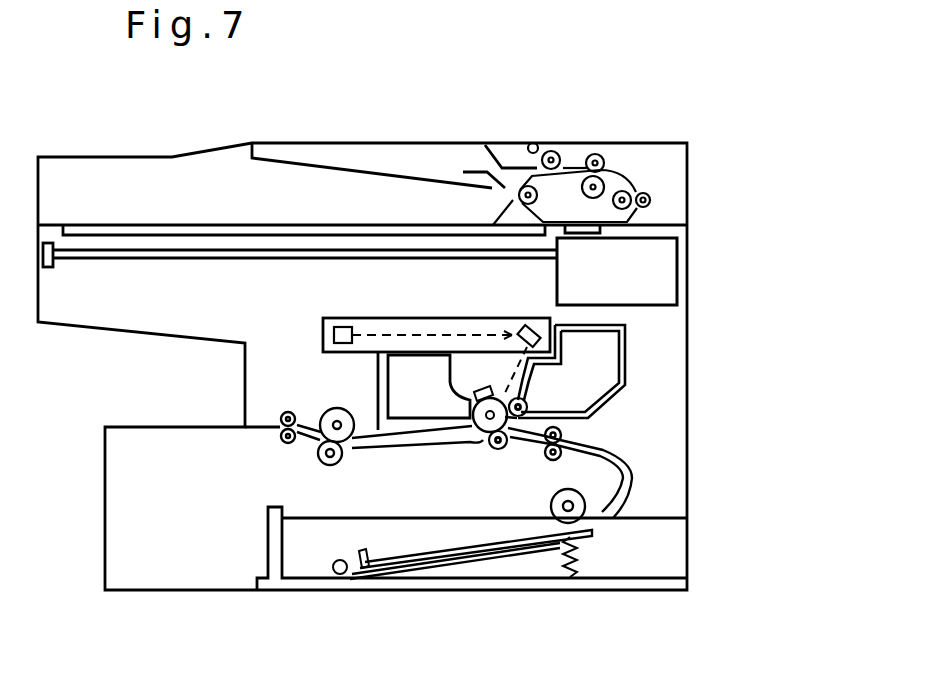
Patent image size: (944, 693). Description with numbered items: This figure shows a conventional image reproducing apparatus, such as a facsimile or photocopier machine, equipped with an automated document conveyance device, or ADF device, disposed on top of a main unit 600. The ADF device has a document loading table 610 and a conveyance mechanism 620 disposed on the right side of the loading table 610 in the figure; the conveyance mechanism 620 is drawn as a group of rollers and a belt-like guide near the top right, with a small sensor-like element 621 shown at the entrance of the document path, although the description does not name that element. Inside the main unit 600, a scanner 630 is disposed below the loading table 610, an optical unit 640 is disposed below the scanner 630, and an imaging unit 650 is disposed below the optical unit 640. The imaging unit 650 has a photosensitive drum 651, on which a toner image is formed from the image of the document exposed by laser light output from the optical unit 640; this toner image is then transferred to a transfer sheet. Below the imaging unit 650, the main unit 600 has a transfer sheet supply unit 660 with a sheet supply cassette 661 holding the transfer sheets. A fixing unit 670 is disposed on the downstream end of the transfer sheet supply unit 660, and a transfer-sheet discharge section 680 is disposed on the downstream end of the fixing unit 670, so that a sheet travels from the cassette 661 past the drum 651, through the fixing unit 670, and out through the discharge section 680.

The main unit 600 is at (689, 278).
The document loading table 610 is at (372, 172).
The conveyance mechanism 620 is at (632, 165).
The document sensor 621 is at (538, 143).
The scanner 630 is at (572, 290).
The optical unit 640 is at (457, 328).
The imaging unit 650 is at (628, 368).
The photosensitive drum 651 is at (473, 407).
The transfer sheet supply unit 660 is at (538, 452).
The sheet supply cassette 661 is at (498, 568).
The fixing unit 670 is at (320, 462).
The transfer-sheet discharge section 680 is at (207, 427).